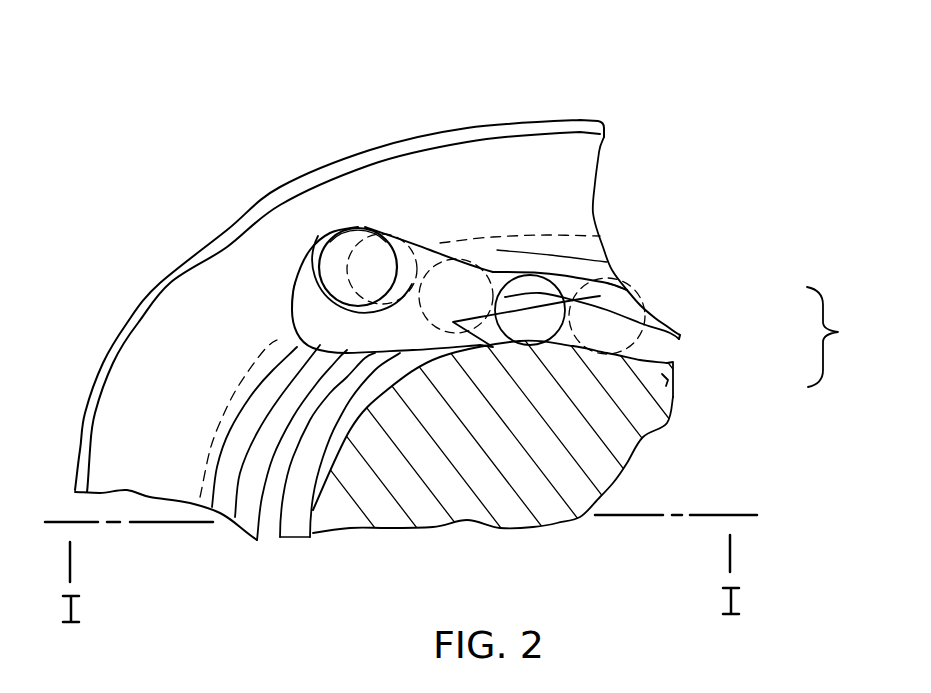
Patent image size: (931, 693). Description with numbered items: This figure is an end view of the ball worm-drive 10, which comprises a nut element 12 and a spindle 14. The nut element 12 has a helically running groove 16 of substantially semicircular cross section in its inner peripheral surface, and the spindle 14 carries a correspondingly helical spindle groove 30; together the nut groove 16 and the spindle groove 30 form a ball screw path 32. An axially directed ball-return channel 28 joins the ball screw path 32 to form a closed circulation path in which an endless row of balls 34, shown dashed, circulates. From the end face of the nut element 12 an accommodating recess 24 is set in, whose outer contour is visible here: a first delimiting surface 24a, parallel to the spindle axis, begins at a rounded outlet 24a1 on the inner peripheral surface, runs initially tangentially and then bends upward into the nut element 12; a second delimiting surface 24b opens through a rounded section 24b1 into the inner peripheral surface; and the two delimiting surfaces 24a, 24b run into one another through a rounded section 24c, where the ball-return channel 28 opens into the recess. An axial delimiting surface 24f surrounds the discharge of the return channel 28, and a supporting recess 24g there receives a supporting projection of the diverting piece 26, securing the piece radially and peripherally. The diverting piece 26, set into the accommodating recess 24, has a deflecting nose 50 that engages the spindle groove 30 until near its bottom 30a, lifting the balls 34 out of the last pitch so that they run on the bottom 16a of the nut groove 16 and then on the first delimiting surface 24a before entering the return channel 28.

The ball worm-drive 10 is at (648, 114).
The nut element 12 is at (222, 273).
The spindle 14 is at (545, 508).
The groove 16 is at (667, 323).
The bottom of the nut groove 16a is at (630, 292).
The accommodating recess 24 is at (420, 245).
The first delimiting surface 24a is at (480, 265).
The rounded outlet 24a1 is at (512, 268).
The second delimiting surface 24b is at (305, 292).
The rounded section 24b1 is at (312, 345).
The rounded section 24c is at (347, 232).
The axial delimiting surface 24f is at (372, 333).
The supporting recess 24g is at (337, 303).
The diverting piece 26 is at (308, 294).
The ball-return channel 28 is at (362, 235).
The spindle groove 30 is at (668, 363).
The bottom of the spindle groove 30a is at (674, 385).
The ball screw path 32 is at (843, 337).
The balls 34 is at (560, 287).
The deflecting nose 50 is at (425, 320).